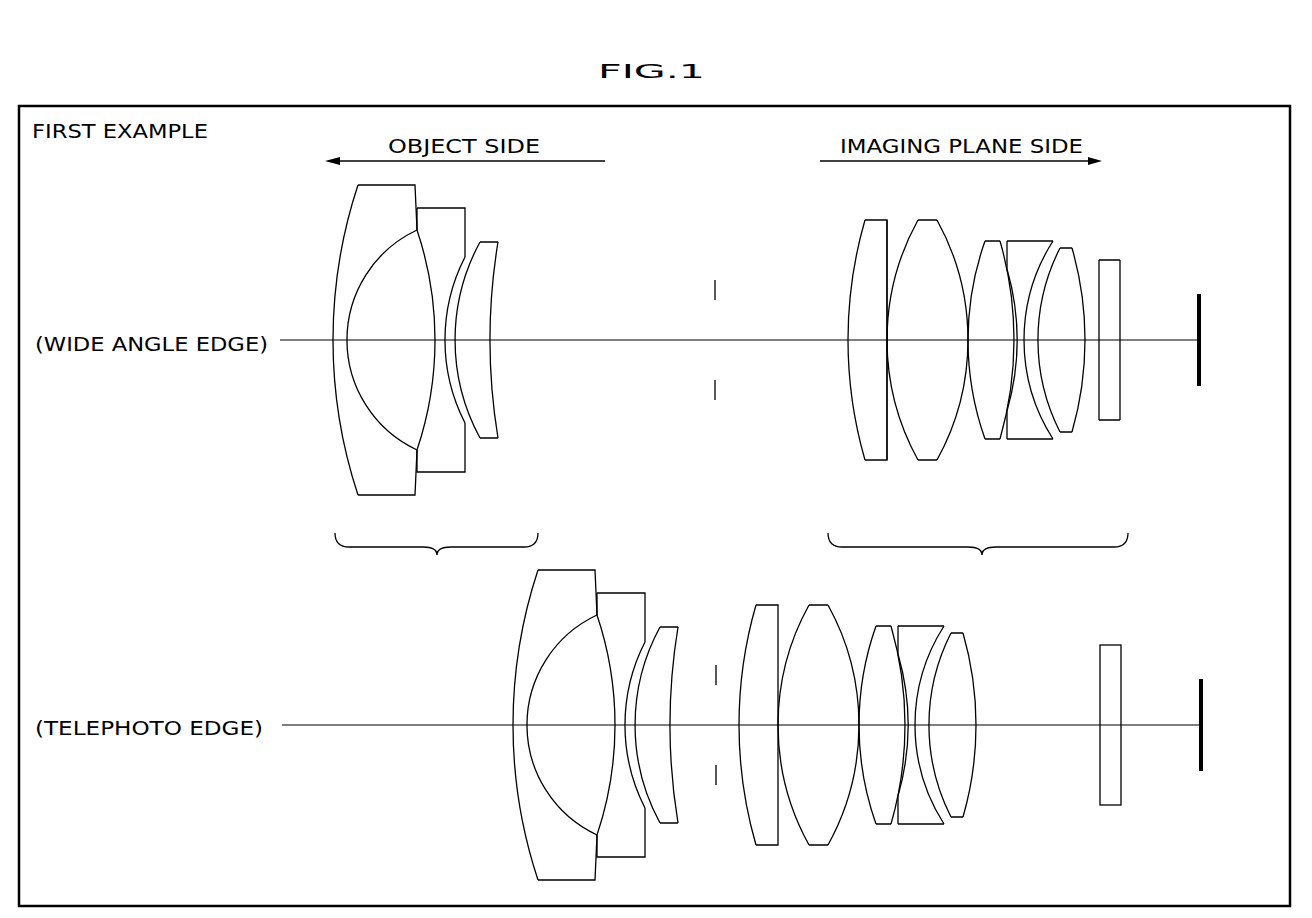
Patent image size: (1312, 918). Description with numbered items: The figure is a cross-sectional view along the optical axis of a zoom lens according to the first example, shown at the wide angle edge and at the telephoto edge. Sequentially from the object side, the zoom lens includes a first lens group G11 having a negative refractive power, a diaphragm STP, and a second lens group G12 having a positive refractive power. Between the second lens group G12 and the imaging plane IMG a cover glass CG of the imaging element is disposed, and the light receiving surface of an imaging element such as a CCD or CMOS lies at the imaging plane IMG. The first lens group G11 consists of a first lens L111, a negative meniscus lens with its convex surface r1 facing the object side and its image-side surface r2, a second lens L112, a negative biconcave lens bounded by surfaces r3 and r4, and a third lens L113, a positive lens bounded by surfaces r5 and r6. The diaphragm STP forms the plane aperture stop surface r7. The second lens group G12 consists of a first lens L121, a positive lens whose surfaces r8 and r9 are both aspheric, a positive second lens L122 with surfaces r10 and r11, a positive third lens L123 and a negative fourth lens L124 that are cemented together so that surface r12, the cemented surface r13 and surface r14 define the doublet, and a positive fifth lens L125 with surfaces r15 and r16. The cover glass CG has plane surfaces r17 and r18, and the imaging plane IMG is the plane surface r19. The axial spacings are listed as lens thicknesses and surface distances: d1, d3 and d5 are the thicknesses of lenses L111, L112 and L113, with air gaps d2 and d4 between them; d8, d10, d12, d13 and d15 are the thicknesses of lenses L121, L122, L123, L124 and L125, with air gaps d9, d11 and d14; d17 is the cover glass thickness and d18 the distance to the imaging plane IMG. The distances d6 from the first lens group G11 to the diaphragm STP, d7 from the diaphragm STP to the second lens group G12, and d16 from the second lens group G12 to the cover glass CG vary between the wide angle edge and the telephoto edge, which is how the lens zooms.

The radius of curvature of object-side surface of first lens L111 r1 is at (333, 283).
The radius of curvature of image-side surface of first lens L111 r2 is at (378, 259).
The radius of curvature of object-side surface of second lens L112 r3 is at (423, 260).
The radius of curvature of image-side surface of second lens L112 r4 is at (458, 268).
The radius of curvature of object-side surface of third lens L113 r5 is at (470, 277).
The radius of curvature of image-side surface of third lens L113 r6 is at (492, 312).
The aperture stop surface r7 is at (714, 288).
The radius of curvature of object-side aspheric surface of first lens L121 r8 is at (853, 268).
The radius of curvature of image-side aspheric surface of first lens L121 r9 is at (885, 247).
The radius of curvature of object-side surface of second lens L122 r10 is at (912, 233).
The radius of curvature of image-side surface of second lens L122 r11 is at (945, 236).
The radius of curvature of object-side surface of third lens L123 r12 is at (985, 250).
The radius of curvature of cemented surface between third lens L123 and fourth lens r13 is at (1008, 268).
The radius of curvature of image-side surface of fourth lens L124 r14 is at (1047, 258).
The radius of curvature of object-side surface of fifth lens L125 r15 is at (1062, 272).
The radius of curvature of image-side surface of fifth lens L125 r16 is at (1081, 257).
The object-side surface of cover glass r17 is at (1093, 262).
The image-side surface of cover glass r18 is at (1120, 309).
The imaging plane surface r19 is at (1193, 292).
The thickness of first lens L111 d1 is at (342, 343).
The distance between first lens L111 and second lens L112 d2 is at (390, 343).
The thickness of second lens L112 d3 is at (435, 343).
The distance between second lens L112 and third lens L113 d4 is at (460, 343).
The thickness of third lens L113 d5 is at (473, 343).
The distance between third lens L113 and diaphragm STP d6 is at (613, 343).
The distance between diaphragm STP and first lens L121 d7 is at (757, 343).
The thickness of first lens L121 d8 is at (867, 343).
The distance between first lens L121 and second lens L122 d9 is at (885, 343).
The thickness of second lens L122 d10 is at (925, 343).
The distance between second lens L122 and third lens L123 d11 is at (967, 343).
The thickness of third lens L123 d12 is at (993, 343).
The thickness of fourth lens L124 d13 is at (1018, 343).
The distance between fourth lens L124 and fifth lens L125 d14 is at (1032, 343).
The thickness of fifth lens L125 d15 is at (1092, 343).
The distance between fifth lens L125 and cover glass CG d16 is at (1097, 343).
The thickness of cover glass CG d17 is at (1112, 343).
The distance between cover glass CG and imaging plane IMG d18 is at (1170, 343).
The first lens of first lens group L111 is at (360, 365).
The second lens of first lens group L112 is at (445, 360).
The third lens of first lens group L113 is at (498, 394).
The first lens of second lens group L121 is at (845, 380).
The second lens of second lens group L122 is at (924, 360).
The third lens of second lens group L123 is at (989, 374).
The fourth lens of second lens group L124 is at (1033, 360).
The fifth lens of second lens group L125 is at (1077, 360).
The first lens group G11 is at (413, 389).
The second lens group G12 is at (966, 388).
The diaphragm STP is at (707, 319).
The cover glass CG is at (1135, 318).
The imaging plane IMG is at (1229, 322).